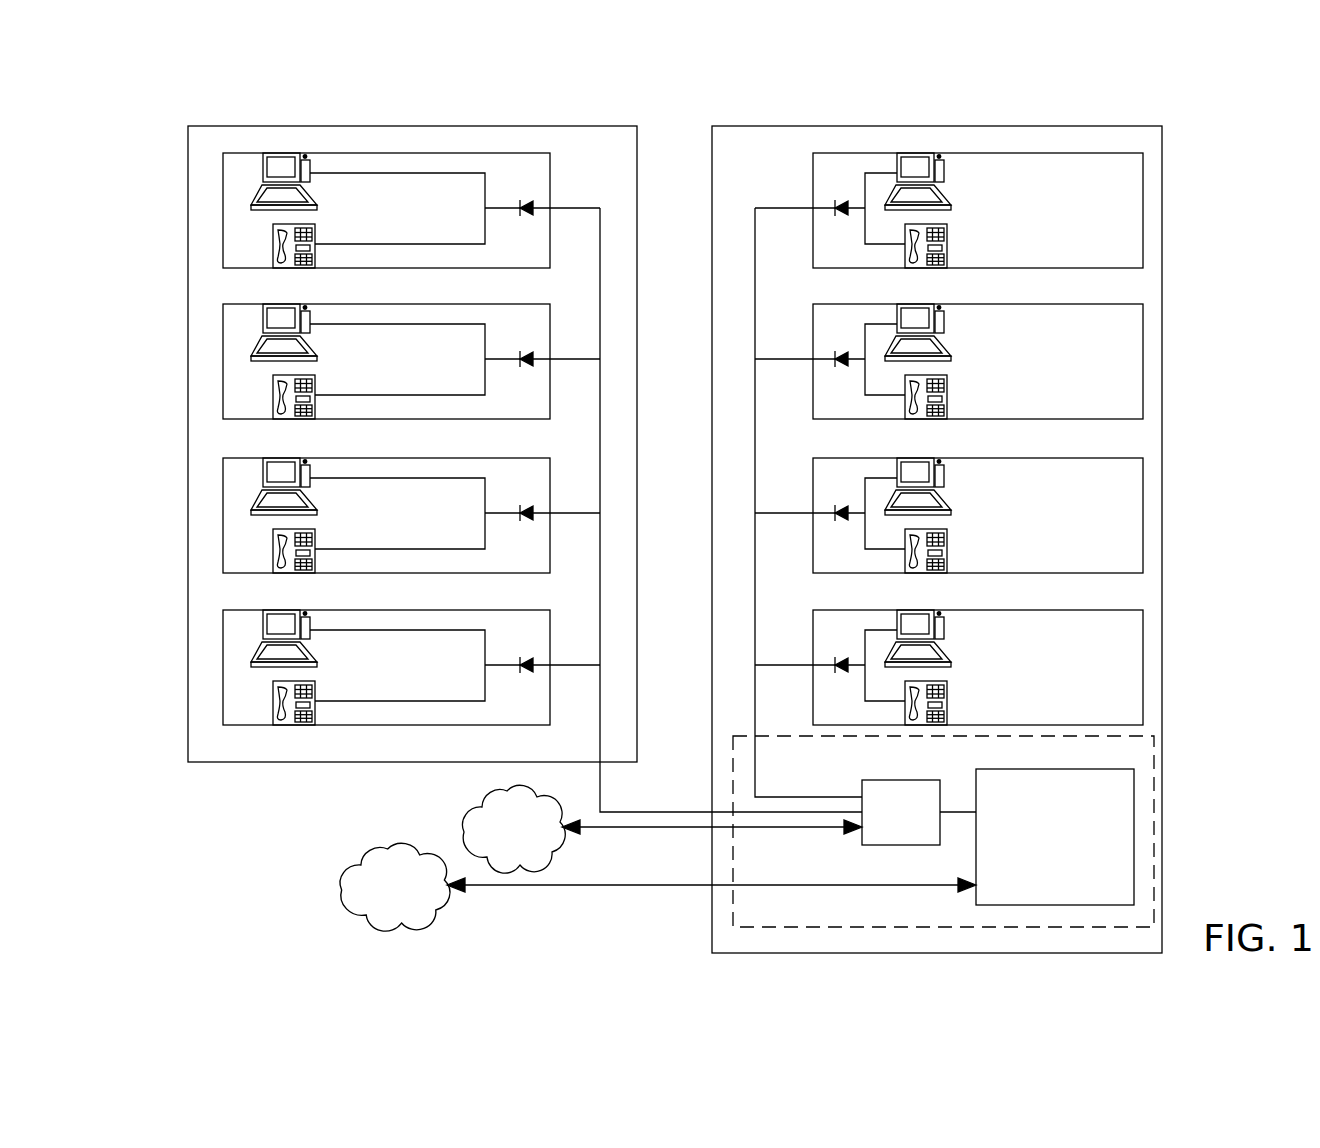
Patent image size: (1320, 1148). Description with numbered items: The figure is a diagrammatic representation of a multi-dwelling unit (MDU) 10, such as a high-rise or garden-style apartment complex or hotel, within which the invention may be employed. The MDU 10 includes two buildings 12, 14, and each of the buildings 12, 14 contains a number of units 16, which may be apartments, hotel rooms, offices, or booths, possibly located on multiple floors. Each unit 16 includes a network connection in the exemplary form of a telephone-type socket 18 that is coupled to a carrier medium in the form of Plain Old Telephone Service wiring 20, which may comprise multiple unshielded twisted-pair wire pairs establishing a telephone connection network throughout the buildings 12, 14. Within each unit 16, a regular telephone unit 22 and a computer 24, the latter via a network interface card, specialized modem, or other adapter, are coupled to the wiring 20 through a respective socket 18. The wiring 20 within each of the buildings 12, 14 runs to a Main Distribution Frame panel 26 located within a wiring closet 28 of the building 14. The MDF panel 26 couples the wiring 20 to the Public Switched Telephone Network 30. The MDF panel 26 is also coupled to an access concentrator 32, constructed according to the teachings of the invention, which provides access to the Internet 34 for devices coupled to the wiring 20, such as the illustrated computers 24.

The multi-dwelling unit (MDU) 10 is at (290, 813).
The building 12 is at (188, 163).
The building 14 is at (712, 163).
The unit 16 is at (470, 152).
The RJ-11 socket 18 is at (535, 203).
The POTS wiring 20 is at (603, 287).
The telephone unit 22 is at (273, 247).
The computer 24 is at (262, 176).
The MDF panel 26 is at (862, 780).
The wiring closet 28 is at (1147, 735).
The Public Switched Telephone Network (PSTN) 30 is at (478, 800).
The access concentrator 32 is at (1134, 800).
The Internet 34 is at (347, 866).